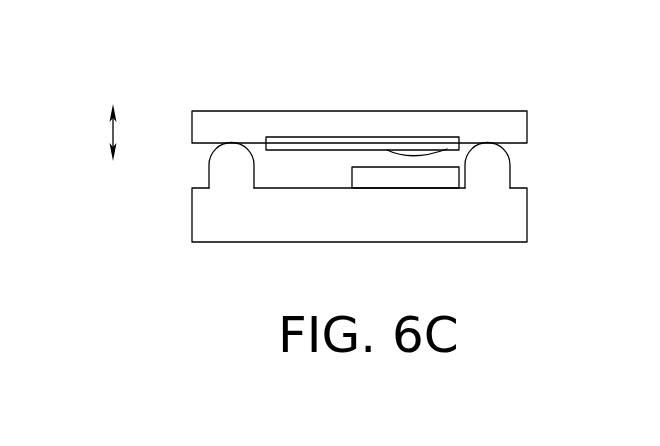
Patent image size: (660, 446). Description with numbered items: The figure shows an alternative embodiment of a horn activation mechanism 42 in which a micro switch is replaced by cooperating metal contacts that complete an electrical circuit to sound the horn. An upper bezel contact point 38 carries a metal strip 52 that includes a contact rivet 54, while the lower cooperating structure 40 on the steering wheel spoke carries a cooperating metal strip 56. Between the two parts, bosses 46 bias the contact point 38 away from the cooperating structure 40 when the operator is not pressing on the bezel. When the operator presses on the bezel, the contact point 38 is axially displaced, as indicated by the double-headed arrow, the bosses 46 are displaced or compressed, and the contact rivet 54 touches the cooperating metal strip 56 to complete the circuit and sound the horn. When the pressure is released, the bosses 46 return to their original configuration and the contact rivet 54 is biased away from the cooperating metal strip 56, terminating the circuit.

The contact point 38 is at (373, 110).
The cooperating structure 40 is at (538, 198).
The horn activation mechanism 42 is at (348, 207).
The bosses 46 is at (220, 161).
The metal strip 52 is at (313, 147).
The contact rivet 54 is at (415, 156).
The cooperating metal strip 56 is at (422, 180).